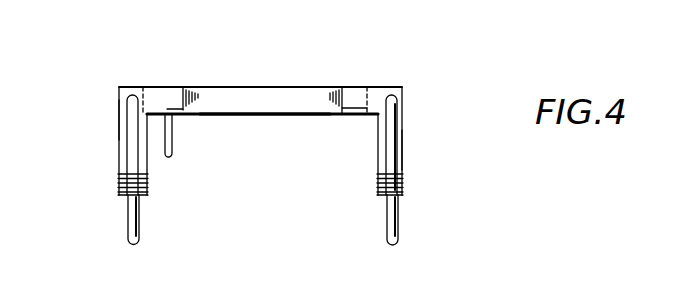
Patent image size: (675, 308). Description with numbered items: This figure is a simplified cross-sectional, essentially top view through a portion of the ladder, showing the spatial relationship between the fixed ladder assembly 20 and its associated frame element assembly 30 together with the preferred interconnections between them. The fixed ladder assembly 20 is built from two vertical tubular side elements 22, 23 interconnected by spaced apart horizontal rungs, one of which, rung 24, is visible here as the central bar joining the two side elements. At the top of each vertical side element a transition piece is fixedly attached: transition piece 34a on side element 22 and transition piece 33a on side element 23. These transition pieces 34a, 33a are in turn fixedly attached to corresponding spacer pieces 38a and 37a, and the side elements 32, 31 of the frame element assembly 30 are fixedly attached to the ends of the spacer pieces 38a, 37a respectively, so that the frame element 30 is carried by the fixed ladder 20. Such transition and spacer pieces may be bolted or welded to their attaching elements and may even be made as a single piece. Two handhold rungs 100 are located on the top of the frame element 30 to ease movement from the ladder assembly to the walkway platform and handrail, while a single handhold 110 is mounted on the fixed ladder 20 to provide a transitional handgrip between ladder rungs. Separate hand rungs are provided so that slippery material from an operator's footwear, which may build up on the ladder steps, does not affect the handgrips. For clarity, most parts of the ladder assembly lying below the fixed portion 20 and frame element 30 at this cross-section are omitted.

The fixed ladder assembly 20 is at (260, 86).
The vertical tubular side element 22 is at (170, 86).
The vertical tubular side element 23 is at (355, 86).
The horizontal rung 24 is at (302, 115).
The frame element assembly 30 is at (119, 148).
The side element of frame element assembly 31 is at (378, 177).
The side element of frame element assembly 32 is at (118, 185).
The transition piece 33a is at (375, 86).
The transition piece 34a is at (145, 87).
The spacer piece 37a is at (402, 158).
The spacer piece 38a is at (119, 115).
The handhold rung 100 is at (133, 246).
The single handhold 110 is at (171, 160).